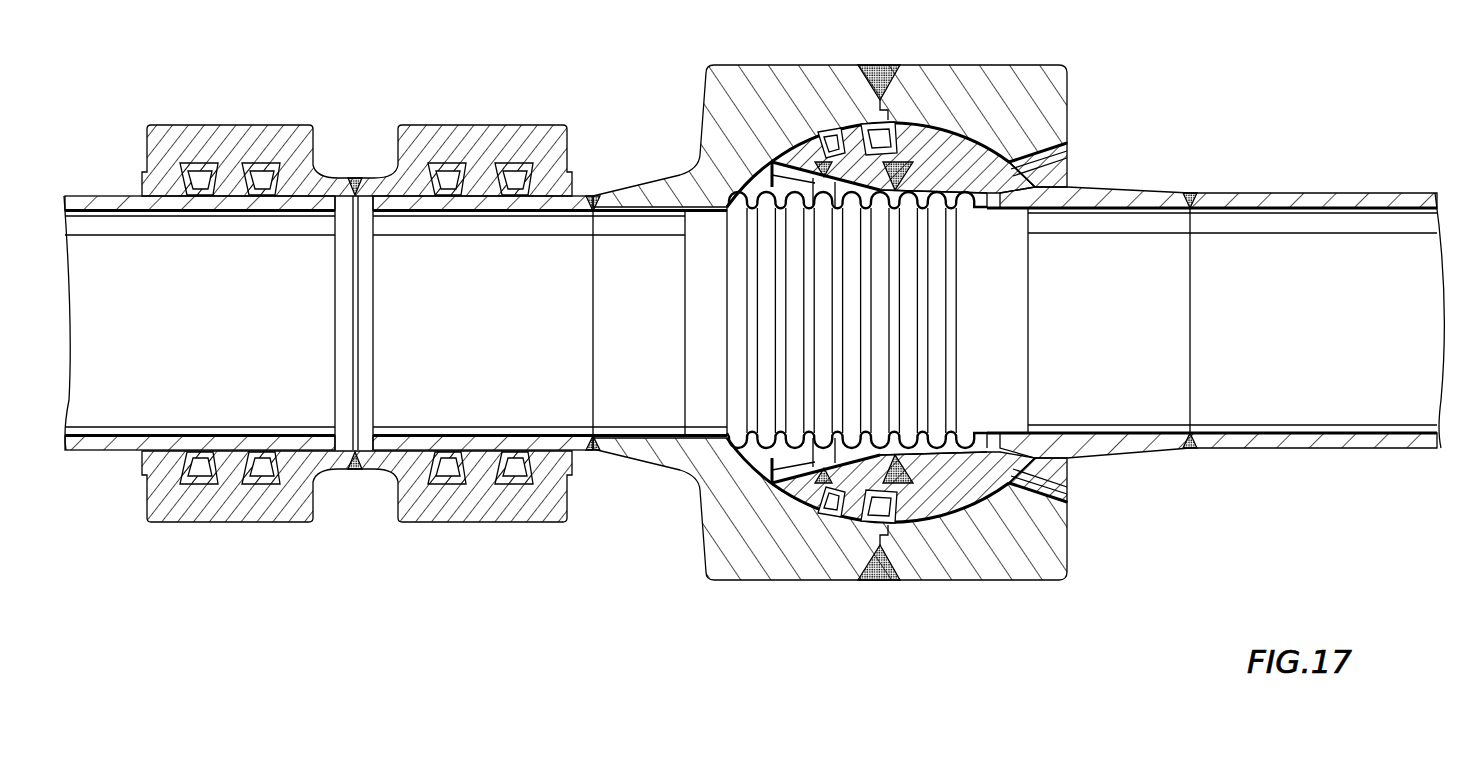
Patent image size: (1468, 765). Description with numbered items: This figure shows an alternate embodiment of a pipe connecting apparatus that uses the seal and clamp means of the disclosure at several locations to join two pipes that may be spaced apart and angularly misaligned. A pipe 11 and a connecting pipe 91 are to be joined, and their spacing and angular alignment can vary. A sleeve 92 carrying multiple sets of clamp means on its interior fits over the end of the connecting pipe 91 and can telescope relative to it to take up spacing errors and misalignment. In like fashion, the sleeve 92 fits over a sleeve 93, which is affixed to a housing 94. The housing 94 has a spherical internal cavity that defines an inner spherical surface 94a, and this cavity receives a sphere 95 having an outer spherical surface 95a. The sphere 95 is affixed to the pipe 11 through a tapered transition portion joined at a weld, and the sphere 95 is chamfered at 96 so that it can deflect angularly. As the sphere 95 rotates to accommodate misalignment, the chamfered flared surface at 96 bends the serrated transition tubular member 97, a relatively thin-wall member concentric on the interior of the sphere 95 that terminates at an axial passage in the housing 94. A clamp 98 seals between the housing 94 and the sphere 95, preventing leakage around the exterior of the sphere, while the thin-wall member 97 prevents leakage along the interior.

The pipe 11 is at (1355, 193).
The connecting pipe 91 is at (98, 196).
The sleeve 92 is at (252, 125).
The sleeve 93 is at (550, 207).
The housing 94 is at (808, 65).
The inner spherical surface 94a is at (973, 147).
The sphere 95 is at (940, 150).
The outer spherical surface 95a is at (1000, 143).
The chamfer 96 is at (790, 155).
The serrated transition tubular member 97 is at (735, 180).
The clamp 98 is at (885, 137).